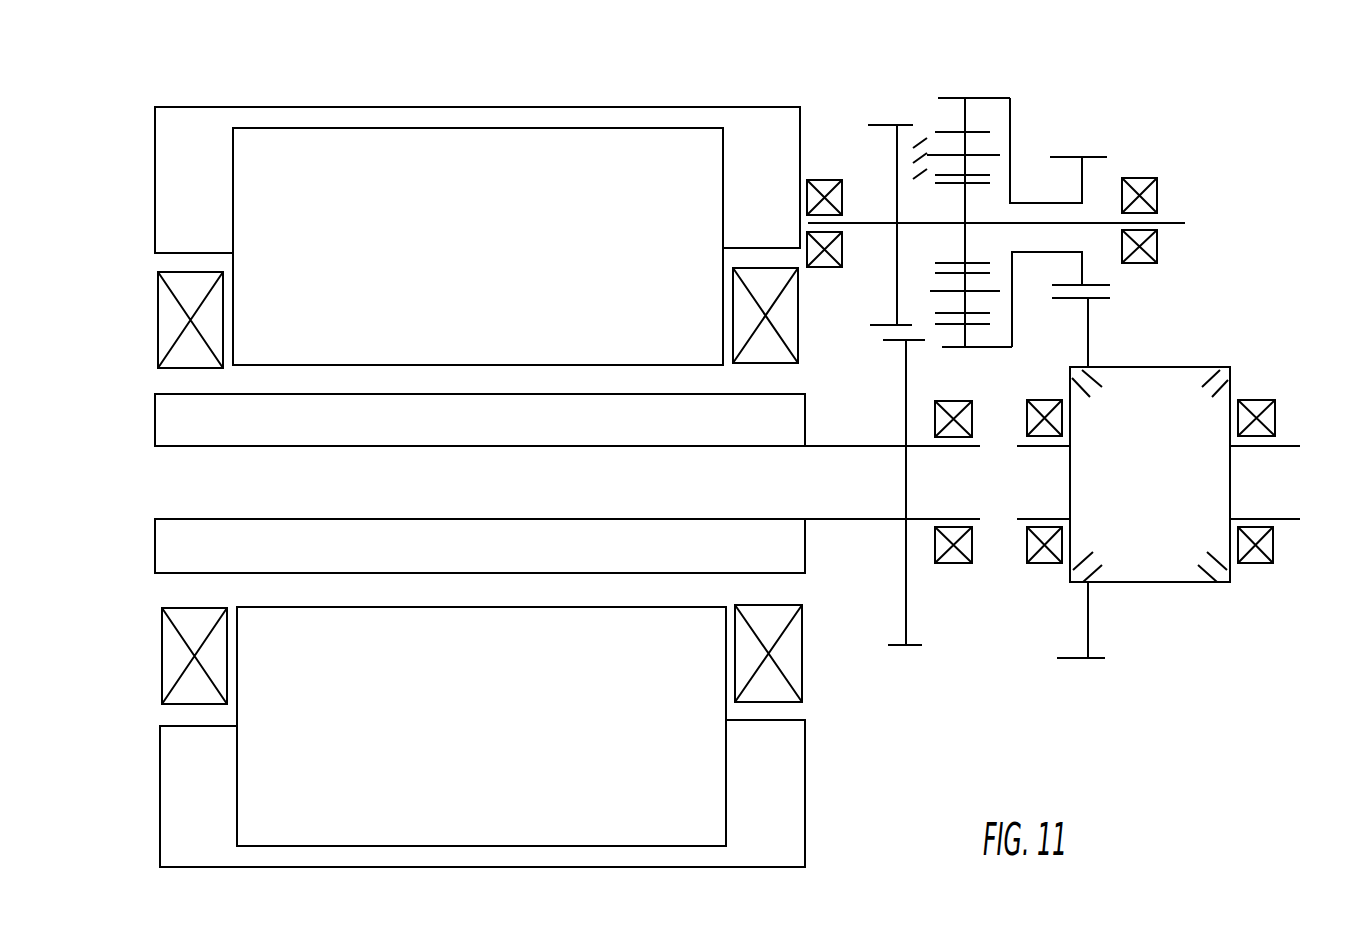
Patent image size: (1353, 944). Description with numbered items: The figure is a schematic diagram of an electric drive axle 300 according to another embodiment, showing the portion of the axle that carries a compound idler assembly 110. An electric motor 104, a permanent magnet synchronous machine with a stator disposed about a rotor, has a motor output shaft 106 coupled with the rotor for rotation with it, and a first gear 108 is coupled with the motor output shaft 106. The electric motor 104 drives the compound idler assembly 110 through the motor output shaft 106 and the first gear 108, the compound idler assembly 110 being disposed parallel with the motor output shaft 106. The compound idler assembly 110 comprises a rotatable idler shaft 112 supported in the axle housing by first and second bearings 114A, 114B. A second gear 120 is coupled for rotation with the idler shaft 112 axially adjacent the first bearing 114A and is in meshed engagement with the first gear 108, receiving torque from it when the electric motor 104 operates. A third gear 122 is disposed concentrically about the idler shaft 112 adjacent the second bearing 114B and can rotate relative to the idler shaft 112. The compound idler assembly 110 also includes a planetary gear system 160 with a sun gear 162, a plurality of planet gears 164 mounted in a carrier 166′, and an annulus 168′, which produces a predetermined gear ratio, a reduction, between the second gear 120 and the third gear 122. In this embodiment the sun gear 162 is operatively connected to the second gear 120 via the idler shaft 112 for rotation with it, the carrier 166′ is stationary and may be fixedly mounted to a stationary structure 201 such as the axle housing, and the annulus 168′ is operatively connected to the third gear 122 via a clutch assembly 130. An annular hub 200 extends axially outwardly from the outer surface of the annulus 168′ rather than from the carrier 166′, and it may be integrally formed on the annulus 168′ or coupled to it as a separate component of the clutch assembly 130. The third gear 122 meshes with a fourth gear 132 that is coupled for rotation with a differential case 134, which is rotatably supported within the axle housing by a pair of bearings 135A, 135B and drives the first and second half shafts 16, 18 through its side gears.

The electric drive axle 300 is at (100, 120).
The electric motor 104 is at (275, 107).
The motor output shaft 106 is at (838, 446).
The first gear 108 is at (885, 340).
The compound idler assembly 110 is at (860, 148).
The idler shaft 112 is at (863, 220).
The first bearing 114A is at (820, 178).
The second bearing 114B is at (1150, 177).
The second gear 120 is at (887, 123).
The third gear 122 is at (1092, 156).
The clutch assembly 130 is at (1065, 353).
The fourth gear 132 is at (1100, 298).
The differential case 134 is at (1193, 358).
The bearing 135A is at (1047, 563).
The bearing 135B is at (1253, 563).
The first half shaft 16 is at (1023, 519).
The second half shaft 18 is at (1296, 519).
The planetary gear system 160 is at (951, 90).
The sun gear 162 is at (971, 291).
The planet gears 164 is at (937, 132).
The carrier 166′ is at (987, 153).
The annulus 168′ is at (972, 97).
The annular hub 200 is at (1012, 140).
The stationary structure 201 is at (918, 188).